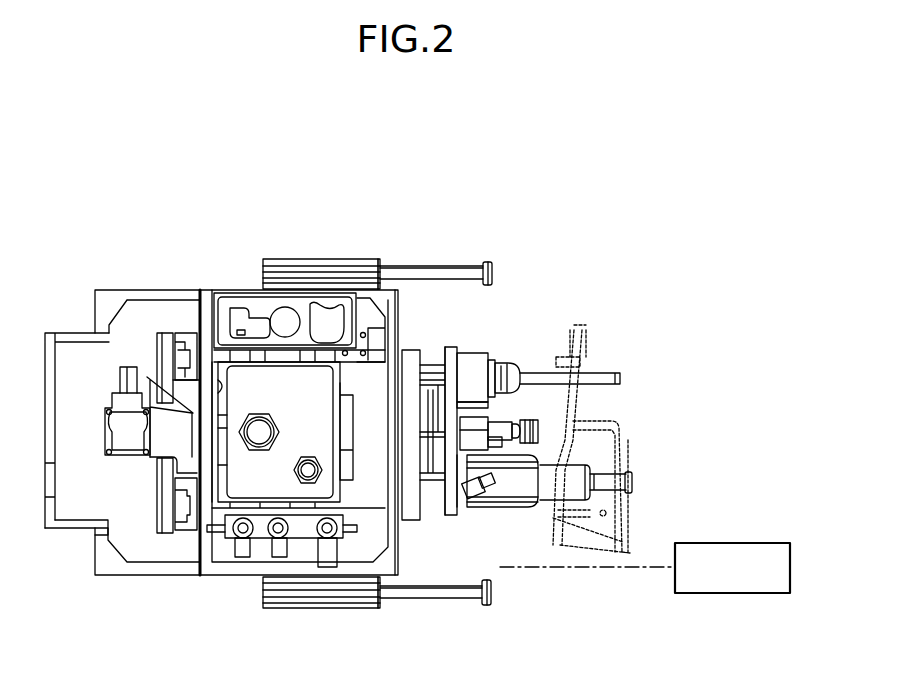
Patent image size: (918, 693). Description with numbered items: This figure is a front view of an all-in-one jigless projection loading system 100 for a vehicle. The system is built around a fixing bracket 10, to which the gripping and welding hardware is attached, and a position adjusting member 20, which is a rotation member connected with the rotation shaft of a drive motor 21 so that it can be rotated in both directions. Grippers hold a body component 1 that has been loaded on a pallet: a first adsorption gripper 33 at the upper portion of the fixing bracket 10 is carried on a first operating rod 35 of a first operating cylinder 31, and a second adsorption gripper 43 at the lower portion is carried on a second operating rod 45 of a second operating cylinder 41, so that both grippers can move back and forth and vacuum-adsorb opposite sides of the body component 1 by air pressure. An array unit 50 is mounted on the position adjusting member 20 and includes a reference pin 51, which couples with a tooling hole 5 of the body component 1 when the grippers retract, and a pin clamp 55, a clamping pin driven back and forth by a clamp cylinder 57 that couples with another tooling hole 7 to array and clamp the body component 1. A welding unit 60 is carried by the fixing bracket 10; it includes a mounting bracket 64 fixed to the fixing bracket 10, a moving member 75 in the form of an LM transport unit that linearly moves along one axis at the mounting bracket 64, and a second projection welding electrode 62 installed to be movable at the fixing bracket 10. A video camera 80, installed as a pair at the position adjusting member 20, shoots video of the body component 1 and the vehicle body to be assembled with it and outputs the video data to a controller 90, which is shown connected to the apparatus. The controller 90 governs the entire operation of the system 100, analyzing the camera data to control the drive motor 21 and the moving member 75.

The all-in-one jigless projection loading system 100 is at (425, 188).
The fixing bracket 10 is at (107, 300).
The mounting bracket 64 is at (167, 337).
The moving member 75 is at (176, 326).
The first operating cylinder 31 is at (325, 258).
The first operating rod 35 is at (436, 270).
The first adsorption gripper 33 is at (489, 261).
The second operating cylinder 41 is at (305, 609).
The second operating rod 45 is at (435, 598).
The second adsorption gripper 43 is at (493, 600).
The position adjusting member 20 is at (455, 342).
The drive motor 21 is at (432, 463).
The array unit 50 is at (522, 353).
The reference pin 51 is at (603, 377).
The welding unit 60 is at (520, 412).
The tooling hole 5 is at (590, 367).
The body component 1 is at (627, 437).
The second projection welding electrode 62 is at (541, 427).
The clamp cylinder 57 is at (505, 503).
The video camera 80 is at (492, 445).
The pin clamp 55 is at (607, 487).
The tooling hole 7 is at (629, 483).
The controller 90 is at (731, 595).